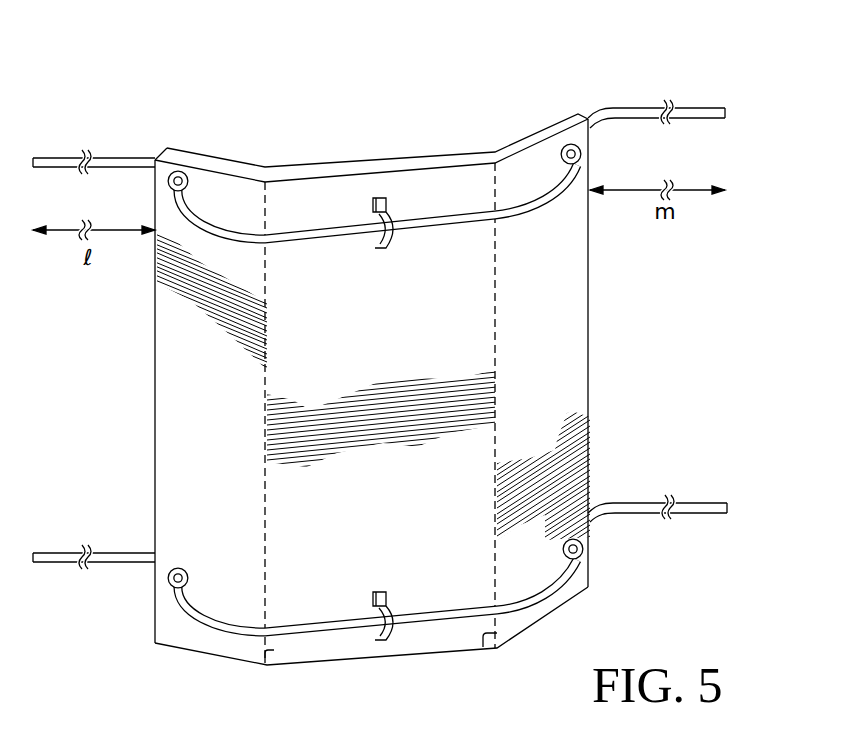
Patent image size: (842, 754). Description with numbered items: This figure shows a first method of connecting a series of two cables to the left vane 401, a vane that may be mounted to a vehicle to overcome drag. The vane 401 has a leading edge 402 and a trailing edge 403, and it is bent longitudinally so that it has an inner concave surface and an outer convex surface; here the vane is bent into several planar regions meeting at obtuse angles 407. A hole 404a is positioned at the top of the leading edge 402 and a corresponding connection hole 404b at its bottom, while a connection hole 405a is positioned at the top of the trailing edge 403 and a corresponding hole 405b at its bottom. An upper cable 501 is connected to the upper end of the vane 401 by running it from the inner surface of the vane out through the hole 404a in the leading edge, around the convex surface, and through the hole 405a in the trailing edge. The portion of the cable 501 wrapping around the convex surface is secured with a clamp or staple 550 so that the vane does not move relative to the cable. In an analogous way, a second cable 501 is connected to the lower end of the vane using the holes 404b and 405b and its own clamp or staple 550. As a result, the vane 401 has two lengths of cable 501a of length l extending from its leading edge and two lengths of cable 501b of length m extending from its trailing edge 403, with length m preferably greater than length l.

The left vane 401 is at (315, 163).
The leading edge 402 is at (155, 328).
The trailing edge 403 is at (590, 337).
The hole 404a is at (182, 178).
The connection hole 404b is at (182, 575).
The connection hole 405a is at (567, 150).
The hole 405b is at (583, 542).
The obtuse angles 407 is at (274, 651).
The cable 501 is at (355, 233).
The length of cable 501a is at (113, 162).
The length of cable 501b is at (640, 112).
The clamp or staple 550 is at (387, 249).